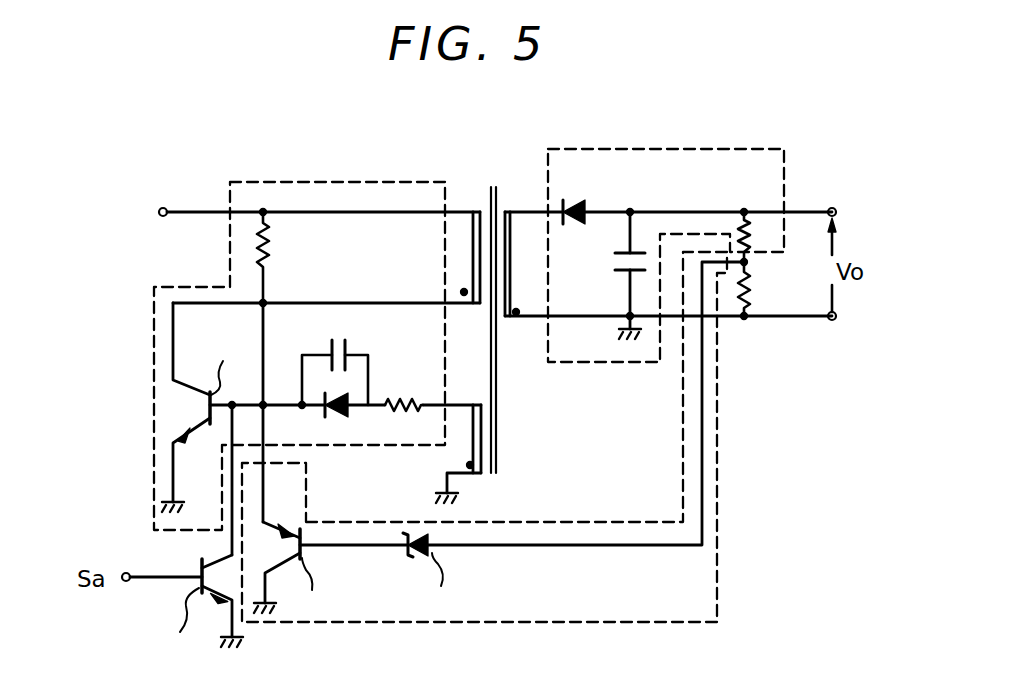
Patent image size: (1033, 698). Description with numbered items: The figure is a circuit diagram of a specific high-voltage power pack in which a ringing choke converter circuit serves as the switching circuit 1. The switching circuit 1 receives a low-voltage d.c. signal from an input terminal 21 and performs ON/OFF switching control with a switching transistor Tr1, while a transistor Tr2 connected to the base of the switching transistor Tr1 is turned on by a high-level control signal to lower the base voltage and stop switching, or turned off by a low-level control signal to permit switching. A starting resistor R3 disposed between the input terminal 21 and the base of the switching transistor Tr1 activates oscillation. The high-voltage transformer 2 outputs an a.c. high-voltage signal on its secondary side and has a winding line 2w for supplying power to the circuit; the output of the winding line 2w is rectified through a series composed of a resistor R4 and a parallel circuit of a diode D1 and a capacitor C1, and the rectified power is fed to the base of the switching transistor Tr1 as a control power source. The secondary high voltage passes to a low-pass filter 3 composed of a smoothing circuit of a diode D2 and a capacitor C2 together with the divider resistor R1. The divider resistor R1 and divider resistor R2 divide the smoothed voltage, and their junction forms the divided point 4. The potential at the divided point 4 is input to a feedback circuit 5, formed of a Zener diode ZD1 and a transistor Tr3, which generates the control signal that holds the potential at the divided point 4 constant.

The switching circuit 1 is at (262, 185).
The high-voltage transformer 2 is at (634, 307).
The winding line 2w is at (497, 458).
The low-pass filter 3 is at (672, 152).
The divided point 4 is at (775, 281).
The feedback circuit 5 is at (718, 578).
The input terminal 21 is at (164, 206).
The divider resistor R1 is at (762, 236).
The divider resistor R2 is at (752, 263).
The starting resistor R3 is at (286, 256).
The resistor R4 is at (433, 386).
The capacitor C1 is at (335, 361).
The capacitor C2 is at (610, 274).
The diode D1 is at (355, 420).
The diode D2 is at (697, 196).
The Zener diode ZD1 is at (391, 575).
The switching transistor Tr1 is at (201, 407).
The transistor Tr2 is at (194, 537).
The transistor Tr3 is at (297, 570).